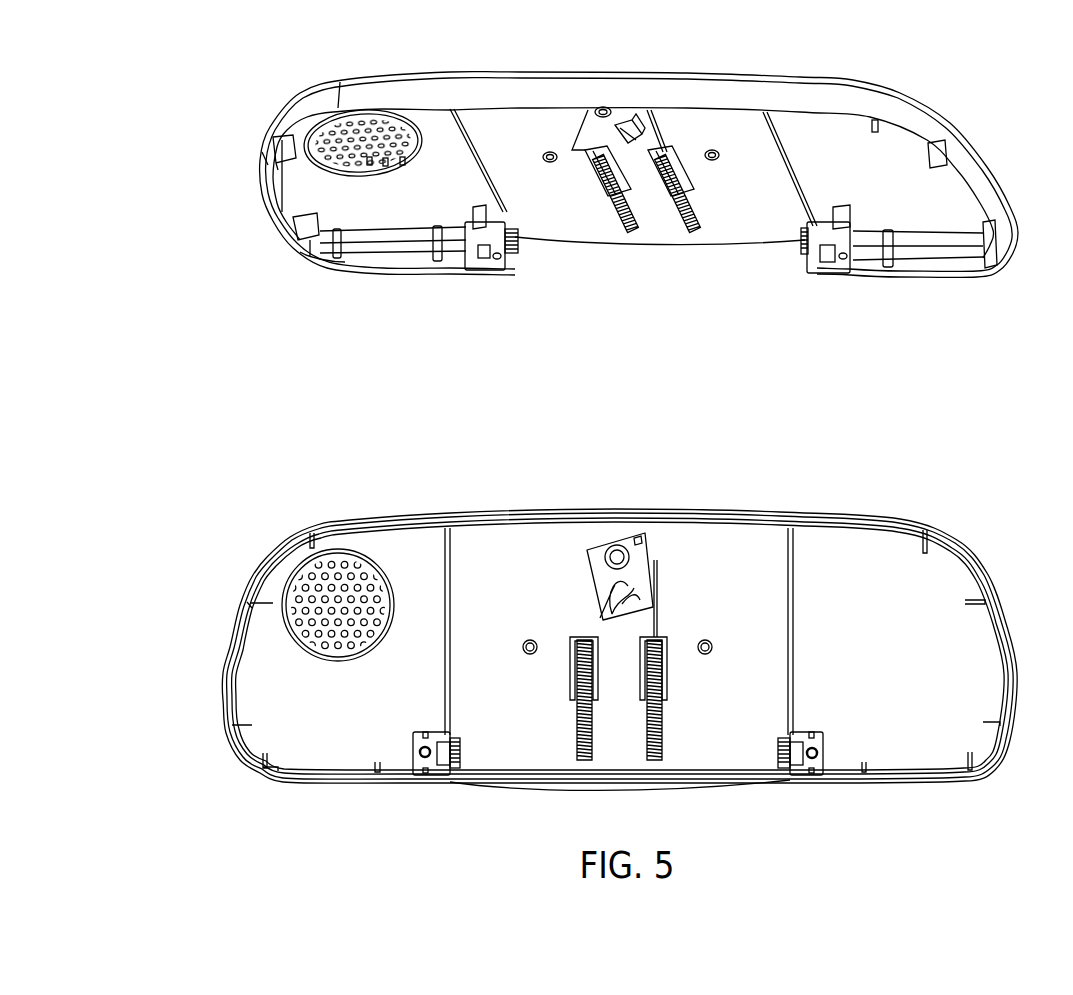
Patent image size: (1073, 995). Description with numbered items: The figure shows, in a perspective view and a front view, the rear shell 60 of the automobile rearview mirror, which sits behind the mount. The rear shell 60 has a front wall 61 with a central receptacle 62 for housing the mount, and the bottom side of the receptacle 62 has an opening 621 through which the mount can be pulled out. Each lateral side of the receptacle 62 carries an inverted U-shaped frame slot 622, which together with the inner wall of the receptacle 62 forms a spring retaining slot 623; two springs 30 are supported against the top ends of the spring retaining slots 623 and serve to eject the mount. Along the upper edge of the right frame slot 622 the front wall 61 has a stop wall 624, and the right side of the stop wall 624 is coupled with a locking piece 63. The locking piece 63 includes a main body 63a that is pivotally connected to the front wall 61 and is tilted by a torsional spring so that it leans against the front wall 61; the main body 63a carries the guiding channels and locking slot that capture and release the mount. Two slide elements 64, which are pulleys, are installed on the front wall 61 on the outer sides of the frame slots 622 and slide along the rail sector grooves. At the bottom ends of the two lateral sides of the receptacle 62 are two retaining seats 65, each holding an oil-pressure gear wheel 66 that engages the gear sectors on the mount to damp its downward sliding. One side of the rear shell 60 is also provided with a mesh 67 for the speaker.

The spring 30 is at (683, 232).
The rear shell 60 is at (967, 167).
The front wall 61 is at (323, 193).
The receptacle 62 is at (603, 217).
The opening 621 is at (717, 253).
The frame slot 622 is at (580, 180).
The spring retaining slot 623 is at (668, 200).
The stop wall 624 is at (660, 120).
The locking piece 63 is at (588, 128).
The main body 63a is at (627, 117).
The slide element 64 is at (803, 120).
The retaining seat 65 is at (477, 253).
The oil-pressure gear wheel 66 is at (512, 257).
The mesh 67 is at (330, 133).